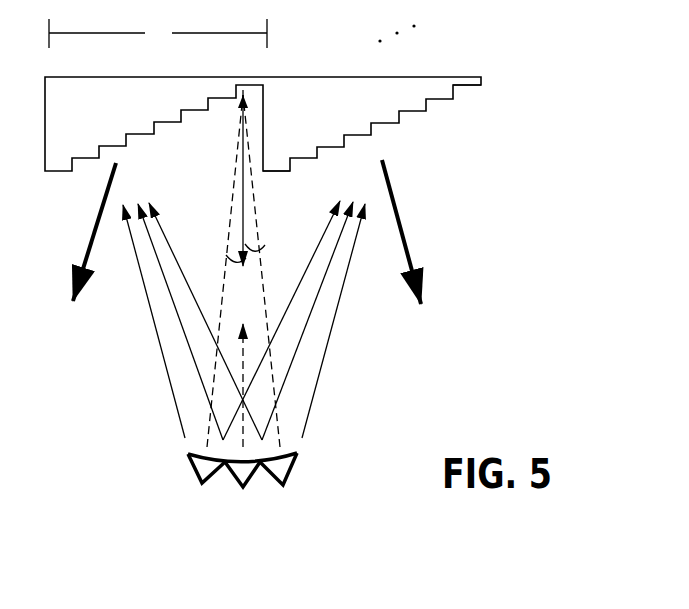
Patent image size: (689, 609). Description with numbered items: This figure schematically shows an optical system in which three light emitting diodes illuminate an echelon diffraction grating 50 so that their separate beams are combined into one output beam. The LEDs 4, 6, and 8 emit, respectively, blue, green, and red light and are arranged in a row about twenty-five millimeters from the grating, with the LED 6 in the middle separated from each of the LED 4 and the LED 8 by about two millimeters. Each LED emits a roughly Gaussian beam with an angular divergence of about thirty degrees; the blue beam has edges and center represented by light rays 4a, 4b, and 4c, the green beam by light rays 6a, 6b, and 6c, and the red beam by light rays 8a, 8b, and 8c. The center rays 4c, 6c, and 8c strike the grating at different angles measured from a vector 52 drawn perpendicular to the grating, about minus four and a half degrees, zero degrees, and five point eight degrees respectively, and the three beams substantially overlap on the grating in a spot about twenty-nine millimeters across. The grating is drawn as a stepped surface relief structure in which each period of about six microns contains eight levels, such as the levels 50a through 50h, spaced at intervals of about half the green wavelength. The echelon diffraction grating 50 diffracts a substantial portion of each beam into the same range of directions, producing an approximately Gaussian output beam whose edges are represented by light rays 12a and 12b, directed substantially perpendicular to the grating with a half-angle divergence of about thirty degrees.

The echelon diffraction grating 50 is at (493, 56).
The grating level 50a is at (453, 75).
The grating level 50h is at (278, 170).
The vector 52 is at (242, 167).
The light ray 8c is at (232, 203).
The light ray 6c is at (242, 362).
The light ray 4c is at (253, 185).
The light ray 8a is at (145, 290).
The light ray 6a is at (180, 320).
The light ray 4a is at (209, 332).
The light ray 8b is at (308, 272).
The light ray 6b is at (308, 323).
The light ray 4b is at (317, 388).
The light ray 12a is at (83, 257).
The light ray 12b is at (412, 252).
The LED 8 is at (202, 487).
The LED 6 is at (243, 490).
The LED 4 is at (282, 485).